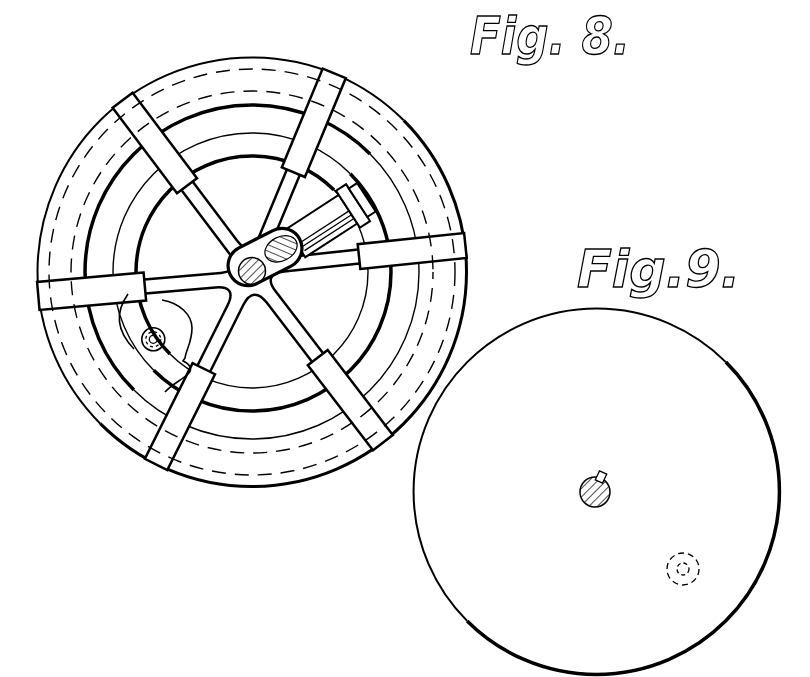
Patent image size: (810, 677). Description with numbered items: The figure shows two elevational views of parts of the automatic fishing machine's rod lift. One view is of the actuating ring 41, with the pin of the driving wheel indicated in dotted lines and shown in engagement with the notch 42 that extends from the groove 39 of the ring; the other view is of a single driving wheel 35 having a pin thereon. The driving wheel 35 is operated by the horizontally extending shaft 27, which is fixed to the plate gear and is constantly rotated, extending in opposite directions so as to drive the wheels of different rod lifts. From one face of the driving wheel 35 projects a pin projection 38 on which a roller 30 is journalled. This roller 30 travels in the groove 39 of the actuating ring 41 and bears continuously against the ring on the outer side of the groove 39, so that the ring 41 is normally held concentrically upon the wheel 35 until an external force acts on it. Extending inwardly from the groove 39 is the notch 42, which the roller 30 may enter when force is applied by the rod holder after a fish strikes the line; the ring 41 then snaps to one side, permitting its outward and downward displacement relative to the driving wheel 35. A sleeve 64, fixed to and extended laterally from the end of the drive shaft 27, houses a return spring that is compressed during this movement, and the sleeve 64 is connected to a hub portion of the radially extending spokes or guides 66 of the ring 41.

In FIG. 8, the shaft 27 is at (253, 290).
In FIG. 9, the shaft 27 is at (611, 491).
In FIG. 8, the roller 30 is at (152, 351).
In FIG. 9, the driving wheel 35 is at (717, 372).
In FIG. 8, the pin projection 38 is at (142, 350).
In FIG. 9, the pin projection 38 is at (684, 575).
In FIG. 8, the groove 39 is at (397, 211).
In FIG. 8, the actuating ring 41 is at (245, 474).
In FIG. 8, the notch 42 is at (164, 331).
In FIG. 8, the sleeve 64 is at (309, 218).
In FIG. 8, the spokes 66 is at (367, 432).